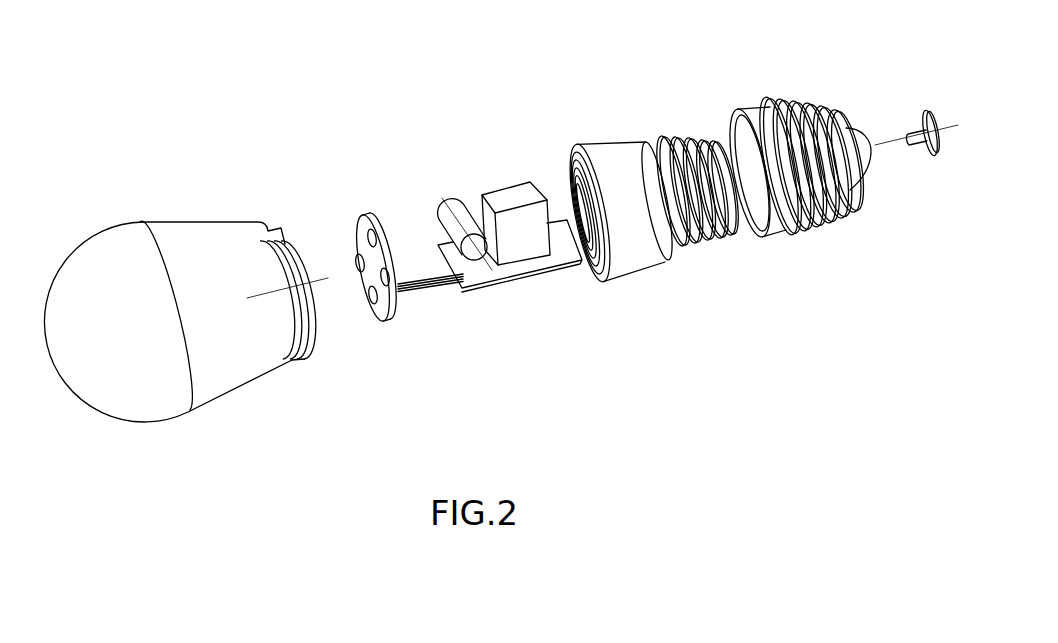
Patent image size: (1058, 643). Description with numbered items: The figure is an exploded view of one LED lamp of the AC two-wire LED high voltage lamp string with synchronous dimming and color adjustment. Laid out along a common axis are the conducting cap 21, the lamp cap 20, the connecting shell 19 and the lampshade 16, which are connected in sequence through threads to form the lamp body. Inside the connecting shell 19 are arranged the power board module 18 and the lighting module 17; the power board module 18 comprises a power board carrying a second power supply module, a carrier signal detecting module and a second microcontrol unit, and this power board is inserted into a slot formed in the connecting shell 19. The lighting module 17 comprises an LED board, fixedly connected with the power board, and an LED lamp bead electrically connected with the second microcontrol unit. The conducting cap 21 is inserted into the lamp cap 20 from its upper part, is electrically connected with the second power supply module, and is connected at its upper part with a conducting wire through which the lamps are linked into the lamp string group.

The lampshade 16 is at (160, 303).
The lighting module 17 is at (376, 245).
The power board module 18 is at (515, 231).
The connecting shell 19 is at (658, 184).
The lamp cap 20 is at (780, 236).
The conducting cap 21 is at (925, 148).